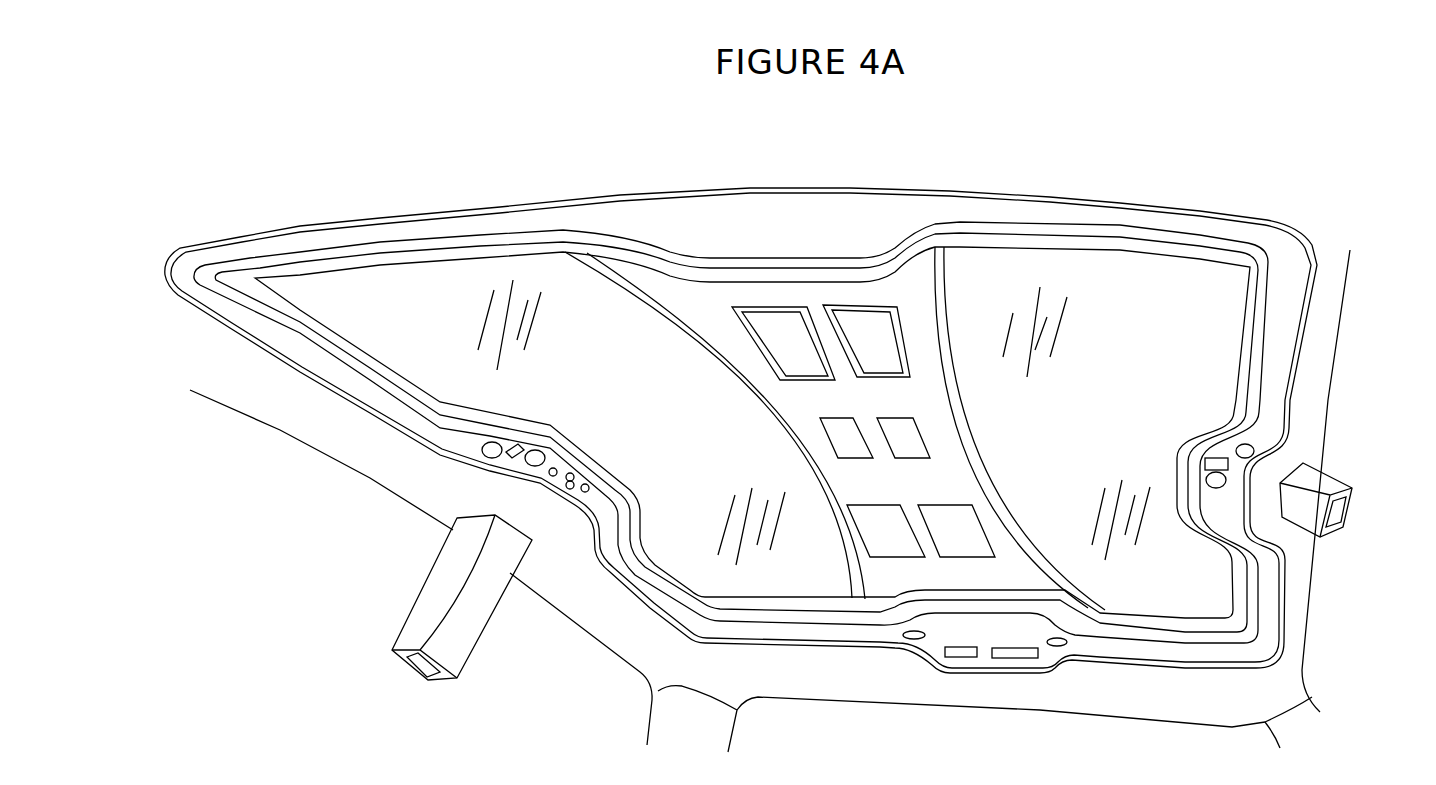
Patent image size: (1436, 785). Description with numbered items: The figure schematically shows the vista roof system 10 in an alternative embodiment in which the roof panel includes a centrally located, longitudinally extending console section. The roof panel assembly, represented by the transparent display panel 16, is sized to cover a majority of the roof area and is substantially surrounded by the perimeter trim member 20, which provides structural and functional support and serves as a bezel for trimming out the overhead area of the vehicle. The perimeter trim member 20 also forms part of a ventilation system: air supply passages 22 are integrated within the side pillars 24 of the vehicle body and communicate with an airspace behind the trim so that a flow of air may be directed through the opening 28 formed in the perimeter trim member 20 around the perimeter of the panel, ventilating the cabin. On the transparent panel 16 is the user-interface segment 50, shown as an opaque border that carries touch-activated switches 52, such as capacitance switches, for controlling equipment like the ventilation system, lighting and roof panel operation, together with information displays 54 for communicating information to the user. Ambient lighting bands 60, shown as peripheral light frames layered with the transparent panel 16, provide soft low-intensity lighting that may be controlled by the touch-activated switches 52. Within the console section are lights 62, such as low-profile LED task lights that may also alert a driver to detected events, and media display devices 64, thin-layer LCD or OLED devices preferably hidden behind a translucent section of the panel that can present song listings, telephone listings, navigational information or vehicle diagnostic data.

The vista roof system 10 is at (1133, 133).
The transparent display panel 16 is at (645, 430).
The perimeter trim member 20 is at (395, 463).
The air supply passages 22 is at (427, 670).
The side pillars 24 is at (468, 627).
The opening 28 is at (1245, 213).
The user-interface segment 50 is at (866, 224).
The touch-activated switches 52 is at (558, 464).
The information displays 54 is at (980, 660).
The ambient lighting bands 60 is at (390, 252).
The lights 62 is at (840, 440).
The media display devices 64 is at (783, 348).